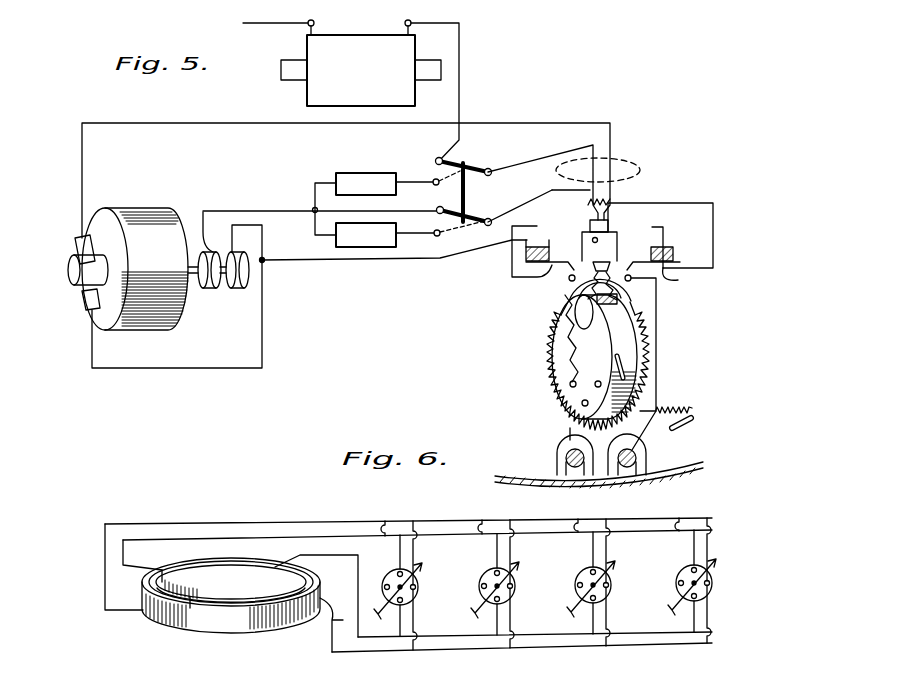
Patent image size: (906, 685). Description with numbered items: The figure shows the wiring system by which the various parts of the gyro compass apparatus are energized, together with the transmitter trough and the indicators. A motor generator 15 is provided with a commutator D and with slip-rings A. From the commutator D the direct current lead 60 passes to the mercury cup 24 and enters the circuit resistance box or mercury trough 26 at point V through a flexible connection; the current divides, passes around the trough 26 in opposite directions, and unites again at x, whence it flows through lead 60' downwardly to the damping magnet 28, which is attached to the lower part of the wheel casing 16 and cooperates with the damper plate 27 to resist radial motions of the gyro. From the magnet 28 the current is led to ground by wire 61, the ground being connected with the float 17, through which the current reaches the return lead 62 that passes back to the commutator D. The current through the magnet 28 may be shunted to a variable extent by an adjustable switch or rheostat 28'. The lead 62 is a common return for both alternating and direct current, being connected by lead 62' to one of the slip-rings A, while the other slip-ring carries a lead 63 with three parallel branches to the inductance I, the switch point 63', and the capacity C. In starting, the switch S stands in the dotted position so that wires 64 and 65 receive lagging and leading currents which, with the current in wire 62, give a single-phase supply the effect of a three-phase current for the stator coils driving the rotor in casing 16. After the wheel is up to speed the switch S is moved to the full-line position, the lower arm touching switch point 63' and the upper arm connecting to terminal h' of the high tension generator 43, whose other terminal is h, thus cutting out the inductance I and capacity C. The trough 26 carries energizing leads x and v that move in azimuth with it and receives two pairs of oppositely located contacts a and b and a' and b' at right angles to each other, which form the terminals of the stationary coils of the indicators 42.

In FIG. 5, the motor generator 15 is at (135, 256).
In FIG. 5, the high tension generator 43 is at (361, 70).
In FIG. 5, the direct current lead 60 is at (346, 162).
In FIG. 5, the lead 60' is at (630, 304).
In FIG. 5, the wire 61 is at (657, 386).
In FIG. 5, the return lead 62 is at (236, 290).
In FIG. 5, the lead 62' is at (394, 244).
In FIG. 5, the lead 63 is at (321, 207).
In FIG. 5, the switch point 63' is at (440, 203).
In FIG. 5, the wire 64 is at (521, 163).
In FIG. 5, the wire 65 is at (516, 204).
In FIG. 5, the mercury cup 24 is at (640, 165).
In FIG. 5, the mercury trough 26 is at (637, 262).
In FIG. 6, the mercury trough 26 is at (233, 635).
In FIG. 5, the wheel casing 16 is at (594, 357).
In FIG. 5, the float 17 is at (583, 404).
In FIG. 5, the damper plate 27 is at (599, 481).
In FIG. 5, the damping magnet 28 is at (616, 443).
In FIG. 5, the switch 28' is at (691, 412).
In FIG. 6, the indicators 42 is at (555, 584).
In FIG. 5, the terminal h is at (287, 19).
In FIG. 5, the terminal h' is at (423, 81).
In FIG. 5, the inductance I is at (366, 184).
In FIG. 5, the capacity C is at (366, 235).
In FIG. 5, the switch S is at (464, 192).
In FIG. 5, the commutator D is at (70, 268).
In FIG. 5, the slip-rings A is at (218, 282).
In FIG. 5, the contact a is at (543, 247).
In FIG. 6, the contact a is at (142, 555).
In FIG. 6, the contact a' is at (207, 592).
In FIG. 5, the contact b is at (653, 244).
In FIG. 6, the contact b is at (331, 617).
In FIG. 6, the contact b' is at (313, 588).
In FIG. 5, the entry point V is at (548, 288).
In FIG. 6, the energizing lead v is at (147, 624).
In FIG. 5, the energizing lead x is at (677, 281).
In FIG. 6, the energizing lead x is at (332, 630).